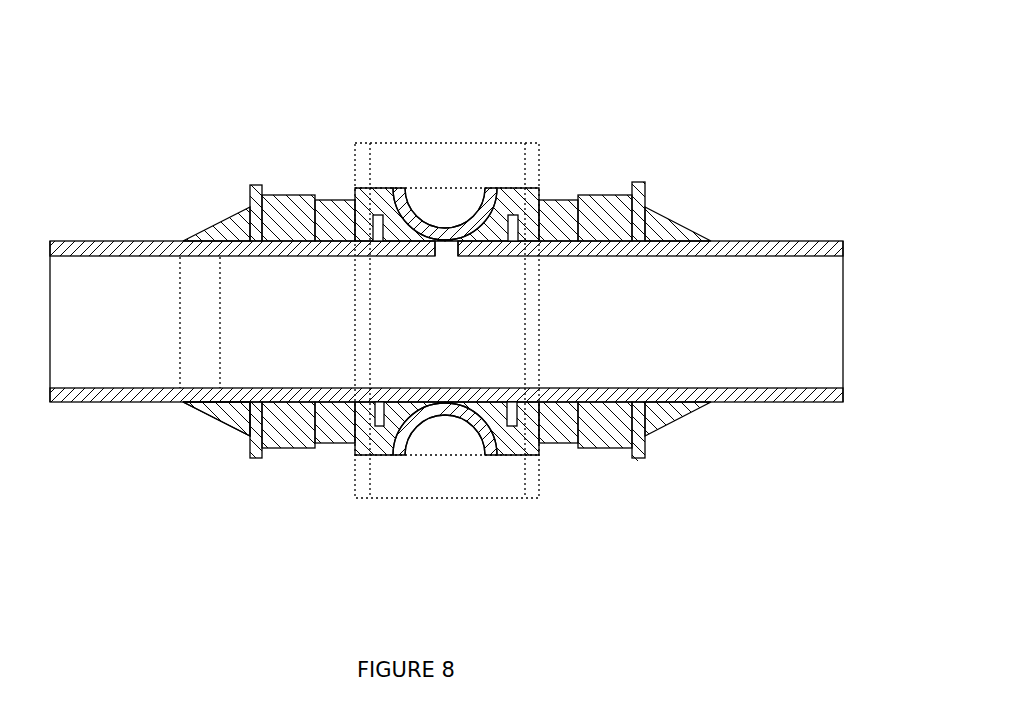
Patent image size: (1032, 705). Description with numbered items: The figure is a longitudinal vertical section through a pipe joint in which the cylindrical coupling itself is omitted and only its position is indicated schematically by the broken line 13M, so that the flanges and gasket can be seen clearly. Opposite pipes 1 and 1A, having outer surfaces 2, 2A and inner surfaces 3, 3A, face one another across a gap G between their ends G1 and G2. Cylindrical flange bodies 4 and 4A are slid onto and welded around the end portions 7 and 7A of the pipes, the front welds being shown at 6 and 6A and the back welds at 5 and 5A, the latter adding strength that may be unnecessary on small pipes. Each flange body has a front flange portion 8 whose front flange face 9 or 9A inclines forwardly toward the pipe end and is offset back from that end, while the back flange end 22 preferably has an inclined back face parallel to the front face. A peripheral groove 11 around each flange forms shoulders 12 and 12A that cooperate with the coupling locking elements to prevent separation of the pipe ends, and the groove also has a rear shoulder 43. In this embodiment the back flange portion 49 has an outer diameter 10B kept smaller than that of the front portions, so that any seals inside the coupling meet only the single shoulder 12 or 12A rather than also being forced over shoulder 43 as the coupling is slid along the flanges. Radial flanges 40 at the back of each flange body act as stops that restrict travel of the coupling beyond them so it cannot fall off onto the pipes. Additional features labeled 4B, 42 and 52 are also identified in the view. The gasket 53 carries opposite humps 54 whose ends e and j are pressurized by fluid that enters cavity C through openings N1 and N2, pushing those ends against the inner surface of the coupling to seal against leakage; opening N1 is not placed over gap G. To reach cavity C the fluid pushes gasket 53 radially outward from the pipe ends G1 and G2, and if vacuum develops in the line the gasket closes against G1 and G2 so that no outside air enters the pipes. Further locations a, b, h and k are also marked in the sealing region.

The pipe 1 is at (50, 390).
The pipe 1A is at (733, 388).
The outer surface of pipe 2 is at (52, 240).
The outer surface of pipe 2A is at (805, 240).
The inner surface of pipe 3 is at (57, 260).
The inner surface of pipe 3A is at (805, 257).
The cylindrical flange body 4 is at (313, 258).
The cylindrical flange body 4A is at (598, 432).
The flange base 4B is at (240, 430).
The back weld 5 is at (213, 232).
The back weld 5A is at (678, 237).
The front welding 6 is at (362, 257).
The front welding 6A is at (603, 245).
The pipe end portion 7 is at (428, 258).
The pipe end portion 7A is at (493, 388).
The front flange portion 8 is at (367, 193).
The front flange face 9 is at (368, 445).
The front flange face 9A is at (495, 187).
The outer diameter of back flange portion 10B is at (273, 198).
The peripheral groove 11 is at (297, 198).
The shoulder 12 is at (348, 198).
The shoulder 12A is at (540, 258).
The broken line indicating coupling 13M is at (358, 143).
The back flange end 22 is at (207, 215).
The stop 40 is at (640, 182).
The flange step 42 is at (330, 444).
The groove shoulder 43 is at (312, 448).
The back flange portion 49 is at (268, 192).
The seal ring 52 is at (477, 225).
The gasket 53 is at (468, 234).
The gasket hump 54 is at (420, 417).
The gap G is at (461, 287).
The pipe end G1 is at (457, 392).
The pipe end G2 is at (432, 398).
The opening N1 is at (473, 232).
The opening N2 is at (400, 212).
The contact point a is at (398, 258).
The contact point b is at (502, 240).
The hump end e is at (393, 195).
The slot h is at (372, 260).
The hump end j is at (500, 215).
The slot k is at (517, 230).
The cavity C is at (458, 432).